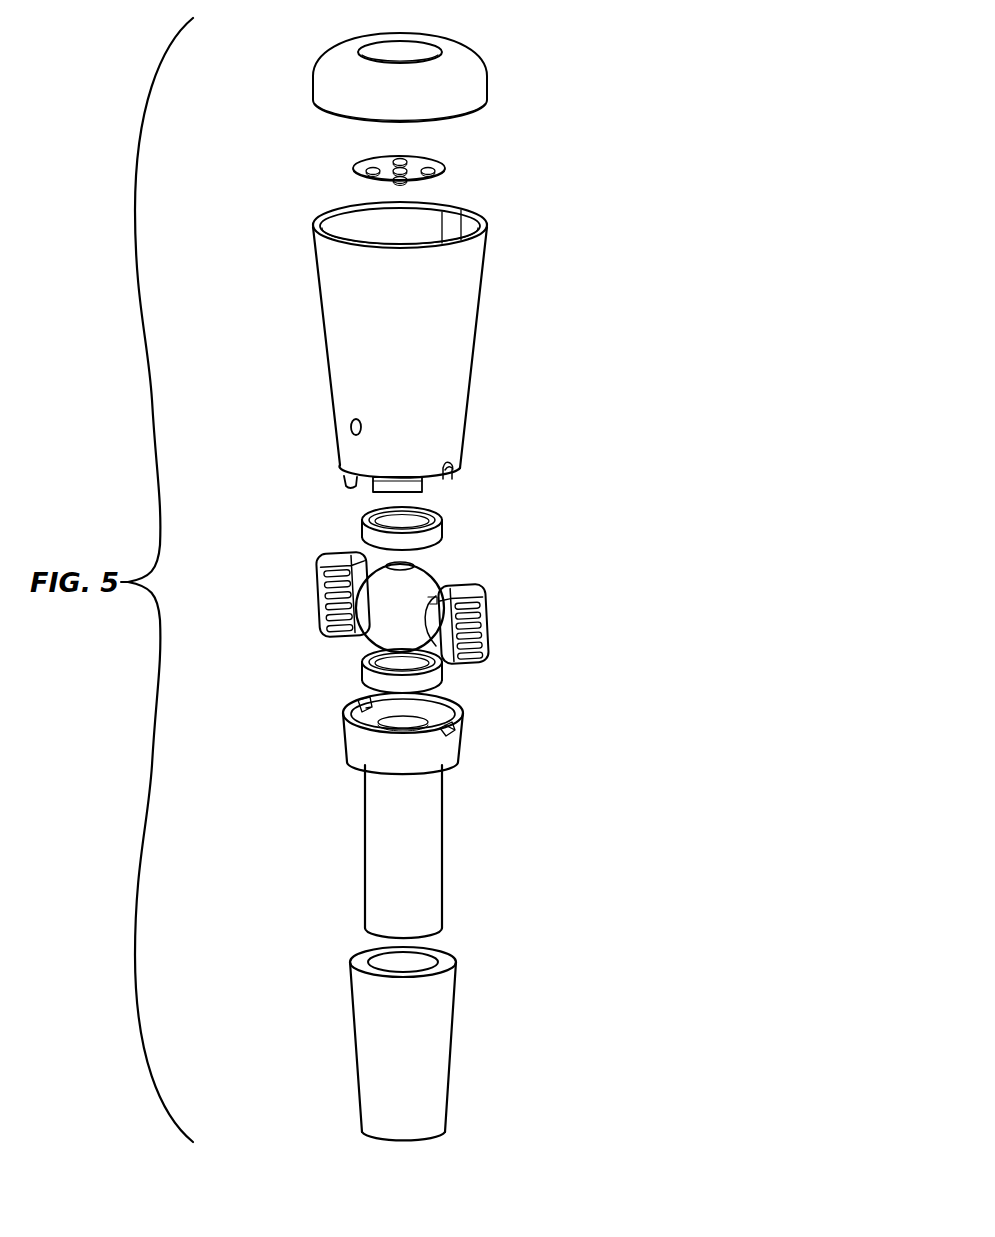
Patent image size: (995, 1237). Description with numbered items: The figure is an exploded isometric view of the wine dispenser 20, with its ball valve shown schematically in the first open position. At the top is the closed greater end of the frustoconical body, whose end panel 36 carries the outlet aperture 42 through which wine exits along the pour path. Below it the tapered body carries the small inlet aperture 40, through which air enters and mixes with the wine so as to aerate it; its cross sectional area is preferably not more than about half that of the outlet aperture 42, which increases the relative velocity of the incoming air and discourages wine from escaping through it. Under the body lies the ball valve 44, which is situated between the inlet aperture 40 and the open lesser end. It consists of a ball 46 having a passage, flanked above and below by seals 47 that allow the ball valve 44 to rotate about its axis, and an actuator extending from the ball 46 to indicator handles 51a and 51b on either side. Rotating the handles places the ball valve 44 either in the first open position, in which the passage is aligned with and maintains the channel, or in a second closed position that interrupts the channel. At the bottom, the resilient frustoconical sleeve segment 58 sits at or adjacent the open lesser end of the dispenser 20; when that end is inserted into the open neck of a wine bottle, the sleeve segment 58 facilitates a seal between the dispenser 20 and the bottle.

The dispenser 20 is at (652, 571).
The end panel 36 is at (415, 48).
The inlet aperture 40 is at (350, 428).
The outlet aperture 42 is at (432, 235).
The ball valve 44 is at (350, 641).
The ball 46 is at (432, 568).
The seals 47 is at (440, 524).
The indicator handle 51a is at (317, 594).
The indicator handle 51b is at (487, 628).
The resilient frustoconical sleeve segment 58 is at (438, 1043).